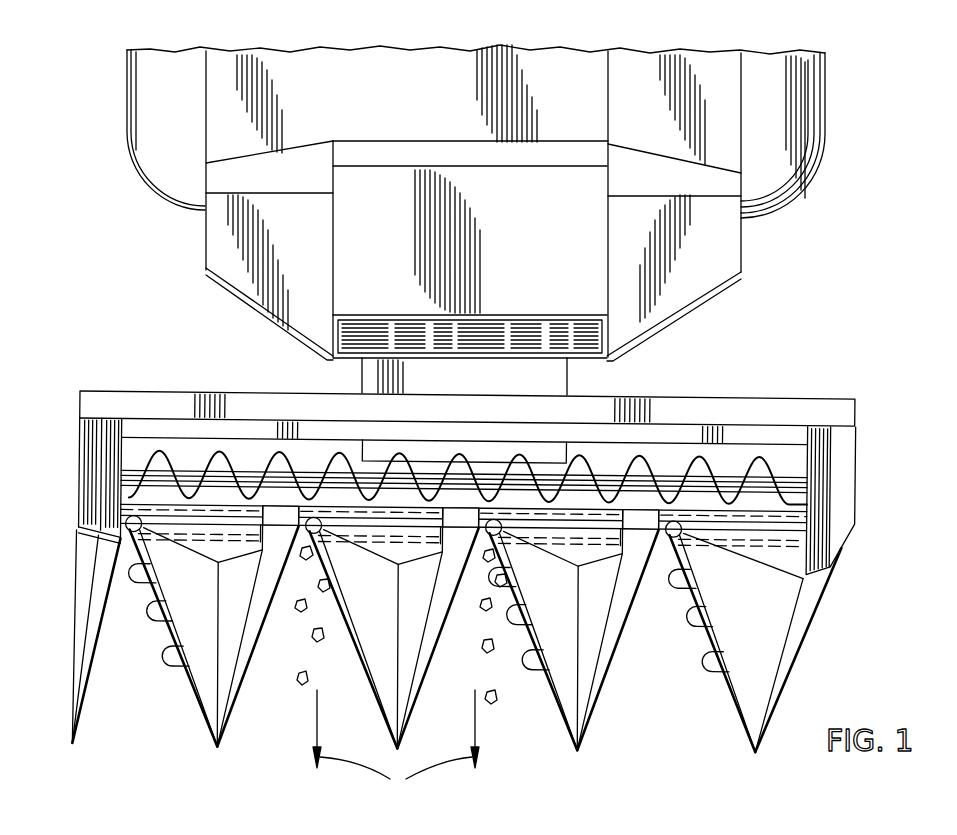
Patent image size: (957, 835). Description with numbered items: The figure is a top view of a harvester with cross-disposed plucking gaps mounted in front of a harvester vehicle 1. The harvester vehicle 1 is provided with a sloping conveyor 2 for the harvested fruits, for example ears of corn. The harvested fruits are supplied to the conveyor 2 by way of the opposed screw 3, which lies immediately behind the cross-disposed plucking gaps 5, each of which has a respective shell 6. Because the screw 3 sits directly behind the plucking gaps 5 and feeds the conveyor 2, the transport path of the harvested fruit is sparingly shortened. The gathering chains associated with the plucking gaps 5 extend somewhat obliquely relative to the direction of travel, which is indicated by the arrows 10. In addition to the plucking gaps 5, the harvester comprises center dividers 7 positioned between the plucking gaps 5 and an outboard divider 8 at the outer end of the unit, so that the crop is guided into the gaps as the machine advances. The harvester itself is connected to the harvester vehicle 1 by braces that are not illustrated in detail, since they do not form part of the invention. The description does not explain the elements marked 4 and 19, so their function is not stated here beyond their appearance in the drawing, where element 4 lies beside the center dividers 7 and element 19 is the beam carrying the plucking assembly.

The harvester vehicle 1 is at (445, 109).
The sloping conveyor 2 is at (456, 386).
The opposed screw 3 is at (796, 476).
The spring fingers 4 is at (702, 623).
The cross-disposed plucking gaps 5 is at (800, 525).
The shells 6 is at (800, 512).
The center dividers 7 is at (778, 625).
The outboard divider 8 is at (82, 623).
The arrows indicating direction of travel 10 is at (401, 673).
The main beam 19 is at (683, 405).